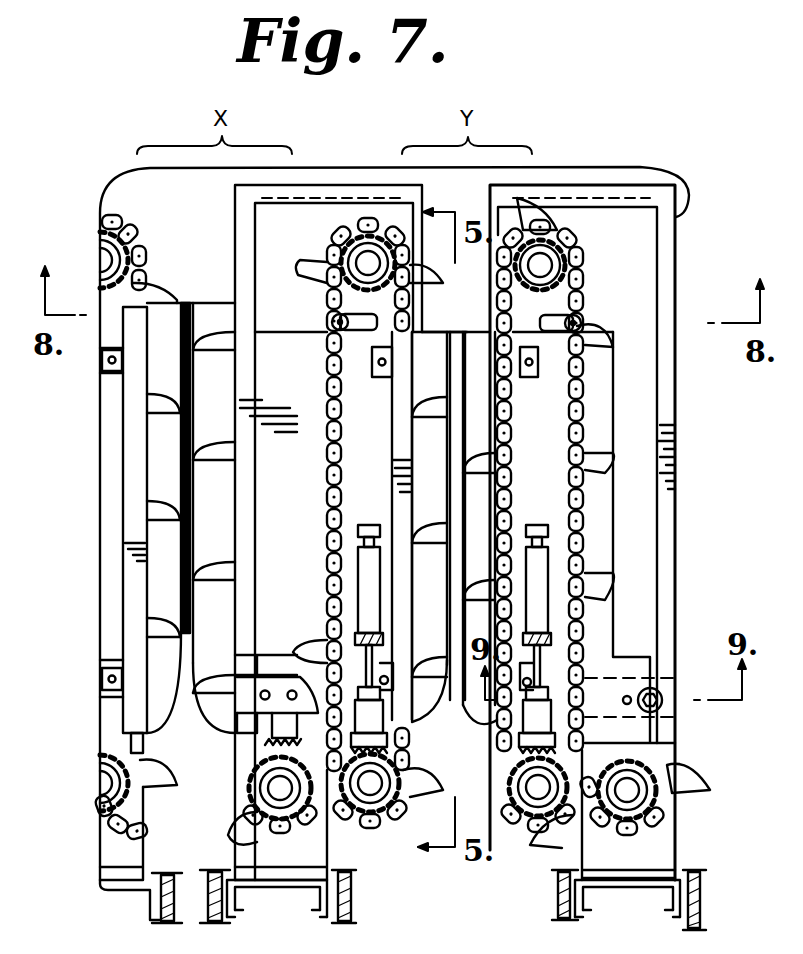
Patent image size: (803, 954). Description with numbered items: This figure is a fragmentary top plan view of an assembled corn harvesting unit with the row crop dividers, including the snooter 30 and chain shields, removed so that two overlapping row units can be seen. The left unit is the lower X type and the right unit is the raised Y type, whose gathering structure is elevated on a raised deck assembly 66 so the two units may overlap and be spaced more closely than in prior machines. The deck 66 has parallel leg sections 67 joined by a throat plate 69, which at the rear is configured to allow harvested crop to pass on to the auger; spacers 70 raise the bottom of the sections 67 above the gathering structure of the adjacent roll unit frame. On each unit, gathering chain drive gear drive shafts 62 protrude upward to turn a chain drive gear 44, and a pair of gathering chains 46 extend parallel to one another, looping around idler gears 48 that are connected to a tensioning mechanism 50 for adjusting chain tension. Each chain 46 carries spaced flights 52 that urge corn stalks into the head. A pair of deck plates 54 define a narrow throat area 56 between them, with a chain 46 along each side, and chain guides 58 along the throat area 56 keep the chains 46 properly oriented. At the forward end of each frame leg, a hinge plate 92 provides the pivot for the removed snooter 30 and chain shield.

The snooter 30 is at (707, 883).
The chain drive gear 44 is at (545, 267).
The gathering chain 46 is at (327, 360).
The idler gear 48 is at (630, 832).
The tensioning mechanism 50 is at (547, 690).
The flight 52 is at (313, 277).
The deck plate 54 is at (473, 553).
The throat area 56 is at (451, 713).
The chain guide 58 is at (133, 477).
The gathering chain drive gear drive shaft 62 is at (590, 277).
The raised deck assembly 66 is at (660, 277).
The leg section 67 is at (253, 487).
The throat plate 69 is at (443, 227).
The spacer 70 is at (231, 705).
The hinge plate 92 is at (297, 890).